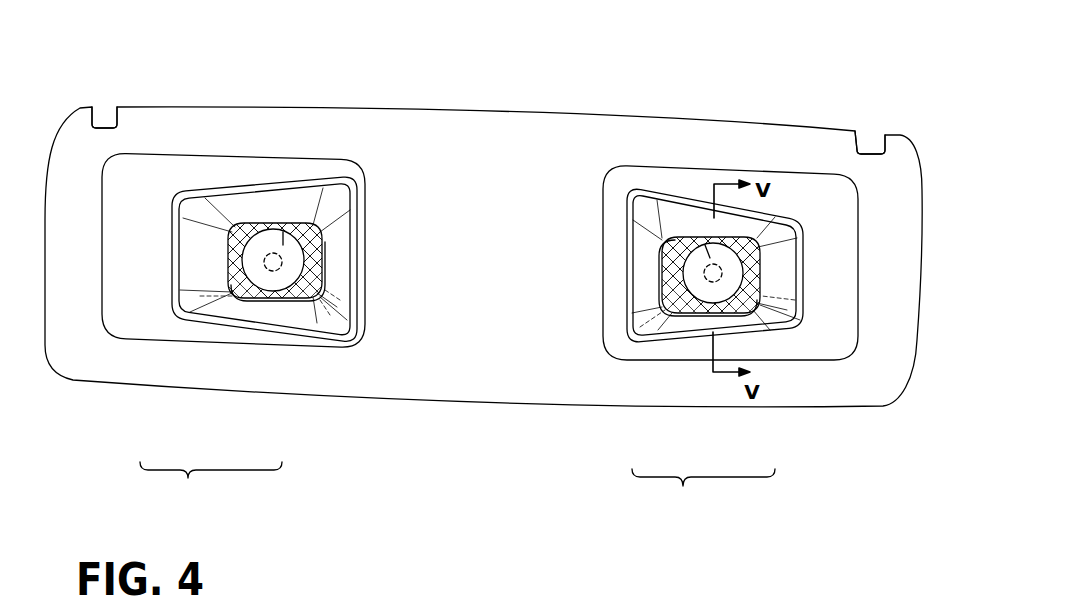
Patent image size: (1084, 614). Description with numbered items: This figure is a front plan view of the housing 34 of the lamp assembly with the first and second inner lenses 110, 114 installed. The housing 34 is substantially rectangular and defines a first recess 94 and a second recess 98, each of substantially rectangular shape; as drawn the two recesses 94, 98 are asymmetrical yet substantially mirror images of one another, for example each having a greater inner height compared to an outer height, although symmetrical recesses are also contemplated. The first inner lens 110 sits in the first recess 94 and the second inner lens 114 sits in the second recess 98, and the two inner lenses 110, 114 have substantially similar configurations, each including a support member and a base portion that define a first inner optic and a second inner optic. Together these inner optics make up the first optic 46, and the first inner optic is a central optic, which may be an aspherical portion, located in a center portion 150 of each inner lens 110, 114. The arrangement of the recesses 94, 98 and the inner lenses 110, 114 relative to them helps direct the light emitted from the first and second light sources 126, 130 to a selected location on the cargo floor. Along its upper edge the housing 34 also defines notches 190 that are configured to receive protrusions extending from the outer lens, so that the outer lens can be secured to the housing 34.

The housing 34 is at (787, 138).
The notches 190 is at (97, 120).
The center portion 150 is at (283, 232).
The first inner lens 110 is at (187, 313).
The first light source 126 is at (352, 347).
The first recess 94 is at (297, 313).
The first optic 46 is at (457, 492).
The second light source 130 is at (620, 342).
The second inner lens 114 is at (757, 292).
The second recess 98 is at (783, 337).